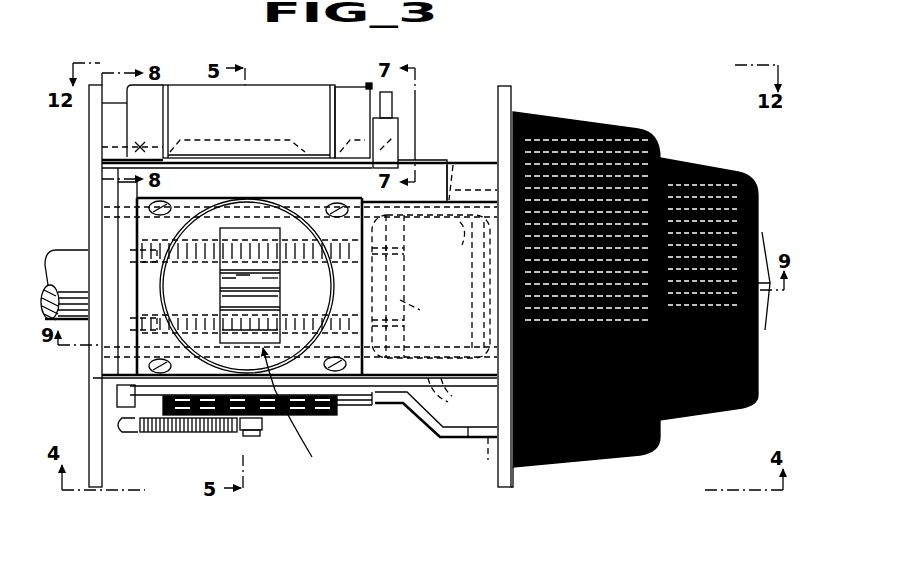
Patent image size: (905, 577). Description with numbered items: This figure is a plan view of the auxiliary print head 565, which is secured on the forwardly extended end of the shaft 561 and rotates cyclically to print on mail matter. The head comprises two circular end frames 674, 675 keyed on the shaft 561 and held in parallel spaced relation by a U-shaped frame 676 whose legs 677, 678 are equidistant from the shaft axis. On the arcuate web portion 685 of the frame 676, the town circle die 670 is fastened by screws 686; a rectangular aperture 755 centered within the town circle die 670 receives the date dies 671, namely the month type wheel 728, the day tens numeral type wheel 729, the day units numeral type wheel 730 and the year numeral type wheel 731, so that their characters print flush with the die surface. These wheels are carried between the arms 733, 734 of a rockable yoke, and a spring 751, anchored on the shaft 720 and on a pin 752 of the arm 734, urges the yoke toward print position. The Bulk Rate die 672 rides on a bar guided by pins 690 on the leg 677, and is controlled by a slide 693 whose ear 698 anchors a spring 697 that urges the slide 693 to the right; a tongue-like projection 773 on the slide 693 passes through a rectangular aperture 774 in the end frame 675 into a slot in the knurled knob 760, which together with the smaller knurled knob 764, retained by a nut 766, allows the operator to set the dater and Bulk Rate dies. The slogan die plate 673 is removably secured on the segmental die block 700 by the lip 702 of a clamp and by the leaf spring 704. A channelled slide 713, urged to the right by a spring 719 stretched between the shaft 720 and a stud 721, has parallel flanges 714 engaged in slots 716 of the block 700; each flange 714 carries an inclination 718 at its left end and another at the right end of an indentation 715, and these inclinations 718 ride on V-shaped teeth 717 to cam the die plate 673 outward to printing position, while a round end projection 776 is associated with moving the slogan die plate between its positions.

The shaft 561 is at (72, 250).
The auxiliary print head 565 is at (427, 100).
The town circle die 670 is at (292, 206).
The date dies 671 is at (299, 409).
The Bulk Rate die 672 is at (312, 414).
The slogan die plate 673 is at (343, 95).
The circular end frame 674 is at (95, 476).
The circular end frame 675 is at (502, 482).
The U-shaped frame 676 is at (430, 398).
The leg of U-shaped frame 677 is at (459, 396).
The leg of U-shaped frame 678 is at (468, 173).
The web portion 685 is at (460, 300).
The screws 686 is at (166, 205).
The pins 690 is at (254, 432).
The slide 693 is at (125, 392).
The spring 697 is at (201, 430).
The ear 698 is at (125, 432).
The segmental die block 700 is at (108, 121).
The lip 702 is at (142, 95).
The leaf spring 704 is at (365, 90).
The channelled slide 713 is at (447, 158).
The flanges 714 is at (421, 170).
The indentation 715 is at (250, 176).
The slots 716 is at (390, 150).
The V-shaped teeth 717 is at (100, 147).
The inclination 718 is at (102, 170).
The spring 719 is at (388, 262).
The shaft 720 is at (400, 302).
The stud 721 is at (147, 258).
The month type wheel 728 is at (270, 230).
The day tens numeral type wheel 729 is at (272, 278).
The day units numeral type wheel 730 is at (226, 296).
The year numeral type wheel 731 is at (232, 330).
The arm of yoke 733 is at (446, 238).
The arm of yoke 734 is at (452, 390).
The spring 751 is at (385, 322).
The pin 752 is at (143, 336).
The rectangular aperture 755 is at (222, 273).
The knurled knob 760 is at (595, 455).
The knurled knob 764 is at (690, 410).
The nut 766 is at (763, 250).
The tongue-like projection 773 is at (478, 434).
The rectangular aperture 774 is at (488, 448).
The round end projection 776 is at (493, 198).